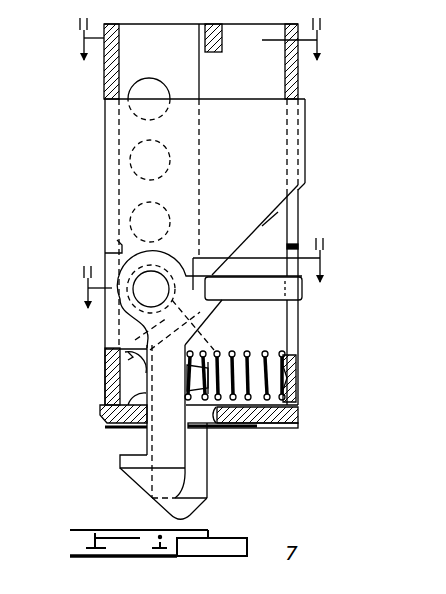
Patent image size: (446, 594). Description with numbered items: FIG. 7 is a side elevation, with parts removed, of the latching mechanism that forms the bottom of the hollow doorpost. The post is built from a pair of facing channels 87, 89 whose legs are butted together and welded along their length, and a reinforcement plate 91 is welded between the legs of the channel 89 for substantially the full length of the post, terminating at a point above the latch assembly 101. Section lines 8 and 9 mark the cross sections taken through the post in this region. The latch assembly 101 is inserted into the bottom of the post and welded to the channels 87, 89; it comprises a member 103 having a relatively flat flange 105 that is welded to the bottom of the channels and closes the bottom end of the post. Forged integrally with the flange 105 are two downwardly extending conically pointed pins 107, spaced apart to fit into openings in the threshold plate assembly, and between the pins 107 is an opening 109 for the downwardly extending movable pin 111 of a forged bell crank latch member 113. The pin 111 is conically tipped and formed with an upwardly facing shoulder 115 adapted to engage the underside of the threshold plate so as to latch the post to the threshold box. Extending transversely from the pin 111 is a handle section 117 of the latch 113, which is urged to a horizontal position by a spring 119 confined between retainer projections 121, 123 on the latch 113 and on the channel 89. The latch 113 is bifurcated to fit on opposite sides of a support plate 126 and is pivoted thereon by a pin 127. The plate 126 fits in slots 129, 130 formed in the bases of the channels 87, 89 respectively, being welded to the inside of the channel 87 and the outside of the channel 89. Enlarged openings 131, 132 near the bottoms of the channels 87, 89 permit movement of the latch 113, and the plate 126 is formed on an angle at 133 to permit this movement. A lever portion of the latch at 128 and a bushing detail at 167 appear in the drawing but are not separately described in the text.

The section line 8- 8 is at (190, 39).
The section line 9- 9 is at (201, 274).
The channel 87 is at (104, 78).
The channel 89 is at (292, 86).
The reinforcement plate 91 is at (222, 30).
The support plate 126 is at (254, 167).
The slot 129 is at (119, 190).
The enlarged opening 131 is at (105, 252).
The lever 128 is at (105, 262).
The pin 127 is at (150, 290).
The slot 130 is at (292, 204).
The angle 133 is at (262, 227).
The handle section 117 is at (270, 272).
The enlarged opening 132 is at (290, 321).
The spring 119 is at (228, 354).
The retainer projection 123 is at (292, 381).
The member 103 is at (293, 414).
The flange 105 is at (298, 426).
The bell crank latch member 113 is at (150, 391).
The bushing 167 is at (105, 363).
The retainer projection 121 is at (192, 383).
The latch assembly 101 is at (144, 383).
The conically pointed pin 107 is at (200, 471).
The shoulder 115 is at (132, 455).
The movable pin 111 is at (142, 482).
The opening 109 is at (214, 429).